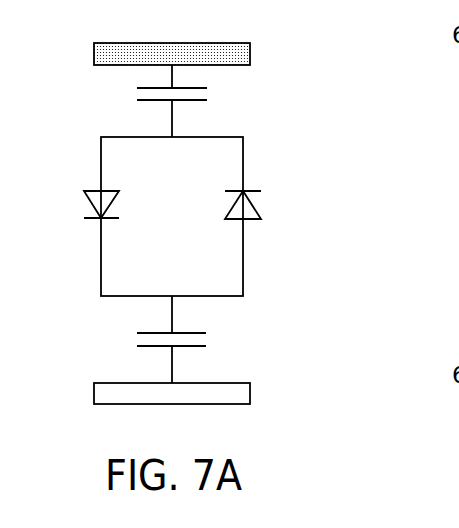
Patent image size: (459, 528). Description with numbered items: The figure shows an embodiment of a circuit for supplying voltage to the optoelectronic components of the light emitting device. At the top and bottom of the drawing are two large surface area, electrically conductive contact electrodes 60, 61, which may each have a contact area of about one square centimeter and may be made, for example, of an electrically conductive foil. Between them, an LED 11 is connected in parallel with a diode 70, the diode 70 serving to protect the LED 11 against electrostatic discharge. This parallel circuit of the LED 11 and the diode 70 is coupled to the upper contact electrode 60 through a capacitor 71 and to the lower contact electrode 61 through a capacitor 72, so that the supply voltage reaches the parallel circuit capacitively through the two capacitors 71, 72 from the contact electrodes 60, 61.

The contact electrode 60 is at (94, 52).
The contact electrode 61 is at (93, 389).
The capacitor 71 is at (130, 98).
The capacitor 72 is at (130, 340).
The LED 11 is at (92, 197).
The diode 70 is at (253, 212).